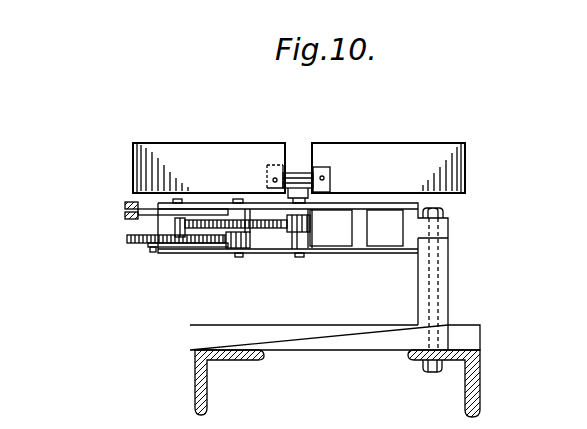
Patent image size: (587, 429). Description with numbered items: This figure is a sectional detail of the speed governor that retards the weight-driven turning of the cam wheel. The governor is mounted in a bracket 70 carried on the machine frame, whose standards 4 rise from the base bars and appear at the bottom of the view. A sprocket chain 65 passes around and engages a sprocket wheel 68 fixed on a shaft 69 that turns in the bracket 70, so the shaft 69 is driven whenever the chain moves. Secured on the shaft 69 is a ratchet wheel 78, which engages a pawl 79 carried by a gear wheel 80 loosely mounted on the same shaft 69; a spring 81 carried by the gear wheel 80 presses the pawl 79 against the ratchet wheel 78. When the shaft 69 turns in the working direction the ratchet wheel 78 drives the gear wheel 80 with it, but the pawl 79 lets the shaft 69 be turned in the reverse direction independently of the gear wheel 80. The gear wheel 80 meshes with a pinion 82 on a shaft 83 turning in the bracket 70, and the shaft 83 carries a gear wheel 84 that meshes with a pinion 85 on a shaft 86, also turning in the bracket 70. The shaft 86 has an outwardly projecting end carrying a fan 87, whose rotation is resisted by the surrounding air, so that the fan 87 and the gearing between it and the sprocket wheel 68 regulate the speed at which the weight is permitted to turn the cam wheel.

The standards 4 is at (198, 384).
The sprocket chain 65 is at (124, 214).
The sprocket wheel 68 is at (150, 210).
The shaft 69 is at (175, 223).
The bracket 70 is at (380, 205).
The ratchet wheel 78 is at (191, 250).
The pawl 79 is at (155, 249).
The gear wheel 80 is at (221, 250).
The spring 81 is at (148, 240).
The pinion 82 is at (251, 250).
The shaft 83 is at (238, 200).
The gear wheel 84 is at (277, 229).
The pinion 85 is at (312, 225).
The shaft 86 is at (297, 248).
The fan 87 is at (452, 168).